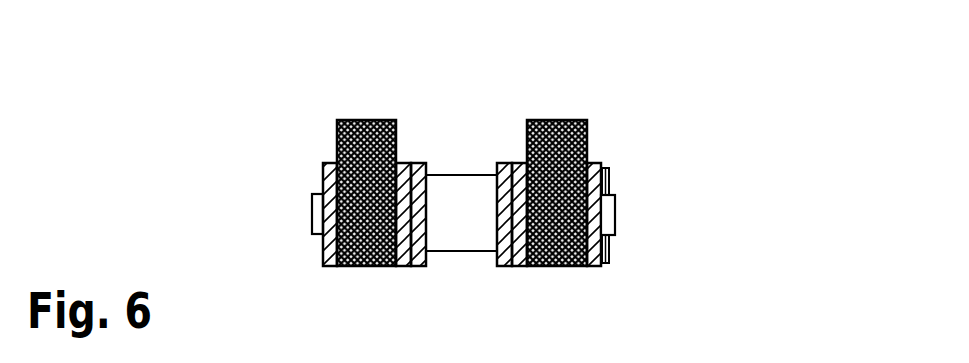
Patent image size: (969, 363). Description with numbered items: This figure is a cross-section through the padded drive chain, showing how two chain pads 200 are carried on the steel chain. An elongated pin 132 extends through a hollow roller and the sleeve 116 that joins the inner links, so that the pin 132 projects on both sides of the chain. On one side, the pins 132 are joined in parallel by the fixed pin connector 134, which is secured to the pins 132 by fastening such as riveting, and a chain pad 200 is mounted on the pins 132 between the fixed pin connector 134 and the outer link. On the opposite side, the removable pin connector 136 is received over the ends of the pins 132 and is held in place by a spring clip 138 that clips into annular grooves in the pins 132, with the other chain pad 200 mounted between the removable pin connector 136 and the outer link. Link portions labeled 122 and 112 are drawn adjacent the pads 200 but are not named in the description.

The chain pad 200 is at (385, 127).
The elongated pin 132 is at (312, 196).
The fixed pin connector 134 is at (326, 252).
The removable pin connector 136 is at (593, 165).
The spring clip 138 is at (609, 178).
The sleeve 116 is at (475, 243).
The hub 122 is at (400, 267).
The bushing 112 is at (418, 267).